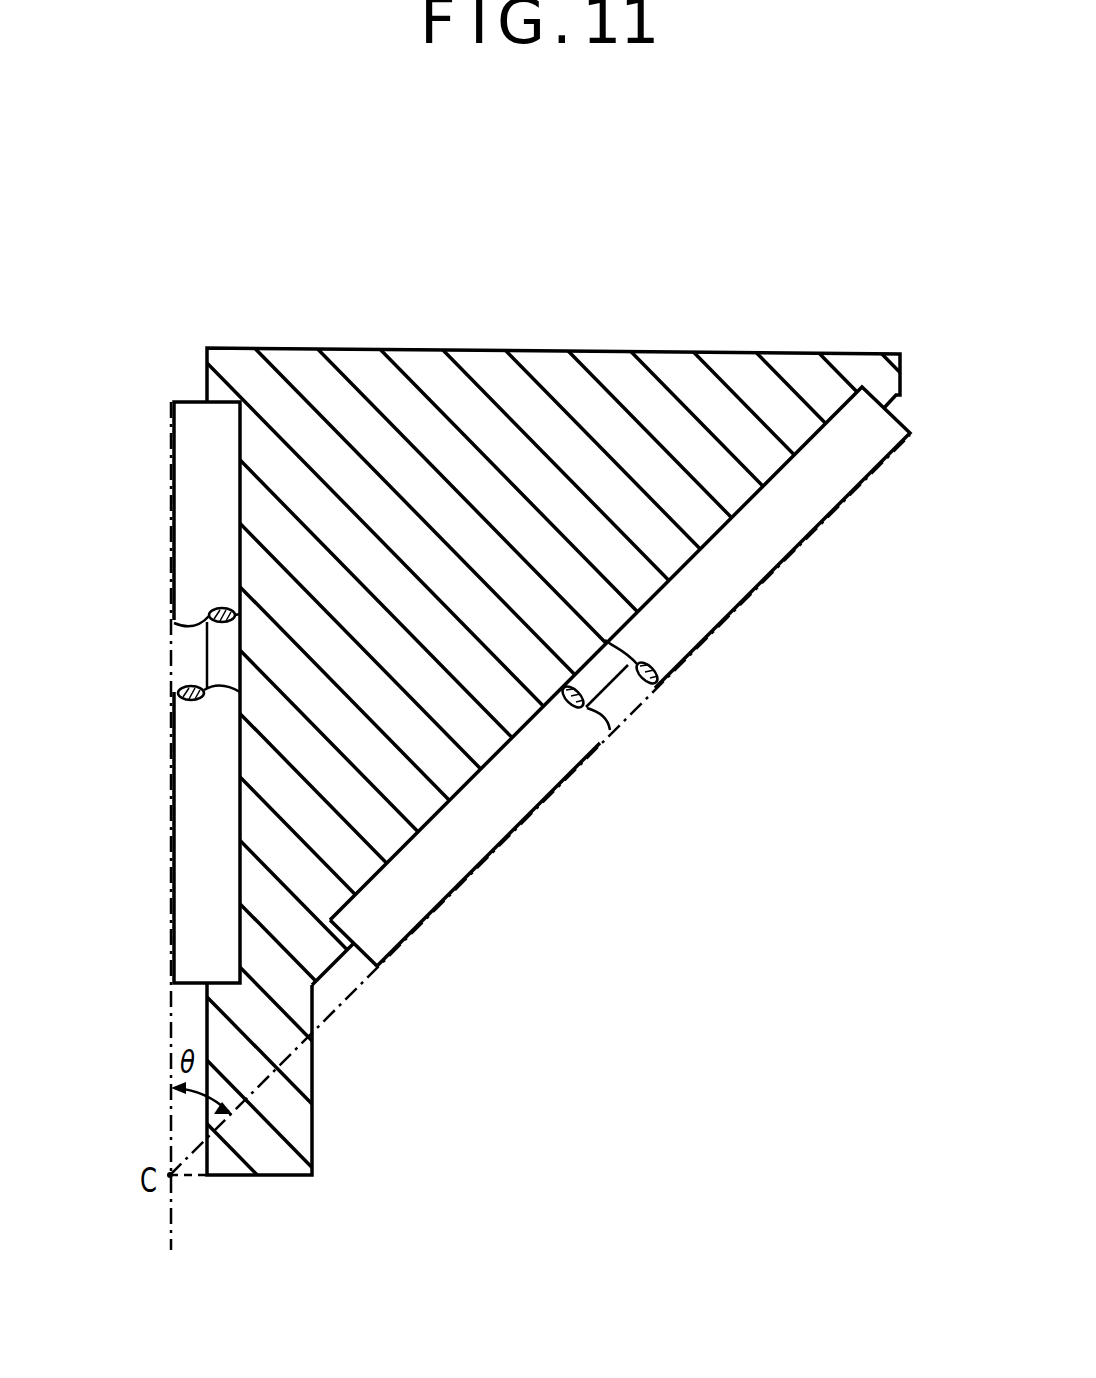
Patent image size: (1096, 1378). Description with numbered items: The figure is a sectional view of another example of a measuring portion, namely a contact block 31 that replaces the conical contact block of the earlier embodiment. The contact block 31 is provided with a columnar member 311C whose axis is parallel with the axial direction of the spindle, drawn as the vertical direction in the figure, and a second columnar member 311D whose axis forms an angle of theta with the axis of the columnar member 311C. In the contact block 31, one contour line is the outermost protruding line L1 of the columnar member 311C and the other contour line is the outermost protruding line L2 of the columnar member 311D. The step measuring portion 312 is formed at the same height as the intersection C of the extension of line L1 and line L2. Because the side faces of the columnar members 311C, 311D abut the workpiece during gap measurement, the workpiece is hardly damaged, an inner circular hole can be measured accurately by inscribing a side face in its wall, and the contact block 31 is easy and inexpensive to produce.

The contact block 31 is at (560, 323).
The columnar member 311C is at (195, 836).
The columnar member 311D is at (483, 833).
The step measuring portion 312 is at (280, 1178).
The outermost protruding line L1 is at (173, 493).
The outermost protruding line L2 is at (785, 557).